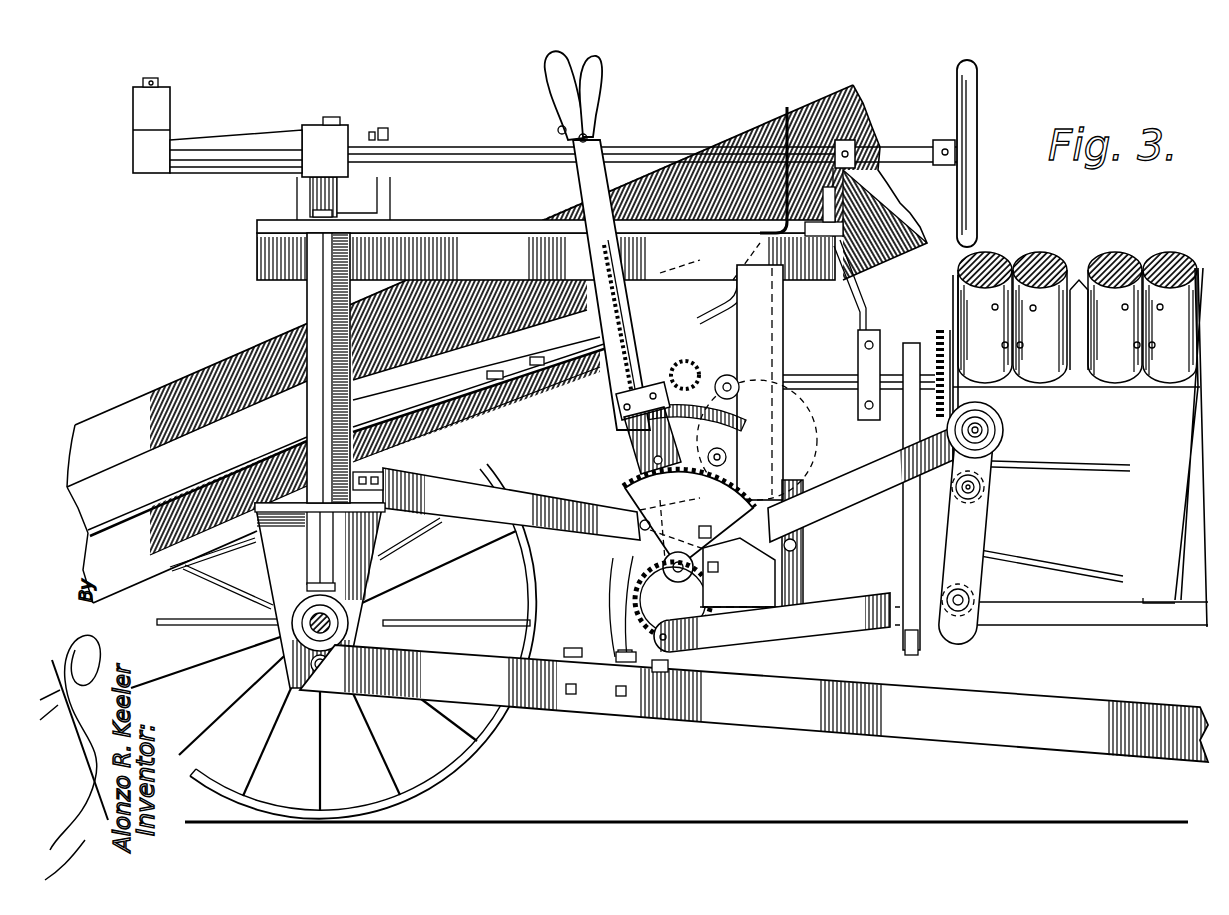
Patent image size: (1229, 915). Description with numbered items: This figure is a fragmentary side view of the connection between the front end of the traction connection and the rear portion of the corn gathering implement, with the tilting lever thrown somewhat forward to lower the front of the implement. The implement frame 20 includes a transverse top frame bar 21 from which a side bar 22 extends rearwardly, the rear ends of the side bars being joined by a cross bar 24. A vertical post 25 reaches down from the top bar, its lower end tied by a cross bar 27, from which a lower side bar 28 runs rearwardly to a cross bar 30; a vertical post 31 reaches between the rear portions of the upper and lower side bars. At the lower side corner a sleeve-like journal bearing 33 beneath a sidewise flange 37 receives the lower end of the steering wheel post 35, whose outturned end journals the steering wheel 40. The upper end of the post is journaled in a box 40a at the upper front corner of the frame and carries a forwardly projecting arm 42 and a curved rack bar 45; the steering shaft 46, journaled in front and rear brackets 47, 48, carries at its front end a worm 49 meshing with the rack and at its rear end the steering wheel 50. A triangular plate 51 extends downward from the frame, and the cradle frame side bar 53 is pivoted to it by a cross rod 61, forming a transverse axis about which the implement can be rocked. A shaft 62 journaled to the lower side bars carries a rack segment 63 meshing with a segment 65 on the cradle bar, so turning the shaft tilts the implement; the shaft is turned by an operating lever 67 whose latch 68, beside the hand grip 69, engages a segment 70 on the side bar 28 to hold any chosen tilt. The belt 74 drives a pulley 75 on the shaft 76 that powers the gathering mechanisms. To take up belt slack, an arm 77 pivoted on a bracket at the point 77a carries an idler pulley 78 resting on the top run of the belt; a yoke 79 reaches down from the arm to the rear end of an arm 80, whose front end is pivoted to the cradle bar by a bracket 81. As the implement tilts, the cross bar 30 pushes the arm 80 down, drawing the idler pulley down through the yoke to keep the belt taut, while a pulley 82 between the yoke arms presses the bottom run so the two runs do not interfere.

The frame 20 is at (232, 249).
The transverse top frame bar 21 is at (300, 216).
The side bar 22 is at (546, 256).
The cross bar 24 is at (787, 150).
The vertical post 25 is at (307, 312).
The cross bar 27 is at (250, 476).
The side bar 28 is at (496, 504).
The cross bar 30 is at (772, 566).
The vertical post 31 is at (765, 358).
The journal bearing 33 is at (310, 556).
The steering wheel post 35 is at (300, 318).
The flange 37 is at (240, 500).
The steering wheel 40 is at (503, 736).
The bracket 40a is at (332, 196).
The forwardly projecting arm 42 is at (258, 128).
The curved rack bar 45 is at (410, 140).
The steering shaft 46 is at (640, 148).
The front bracket 47 is at (383, 128).
The rear bracket 48 is at (853, 125).
The worm 49 is at (370, 132).
The steering wheel 50 is at (980, 108).
The triangular plate 51 is at (273, 583).
The side bar 53 is at (754, 703).
The cross rod 61 is at (292, 672).
The shaft 62 is at (638, 575).
The rack segment 63 is at (741, 604).
The segment 65 is at (625, 612).
The operating lever 67 is at (570, 200).
The latch 68 is at (655, 456).
The hand grip 69 is at (596, 100).
The segment 70 is at (625, 490).
The belt 74 is at (1085, 470).
The pulley 75 is at (640, 426).
The shaft 76 is at (730, 456).
The arm 77 is at (876, 487).
The pivot point 77a is at (800, 546).
The idler pulley 78 is at (1000, 432).
The yoke 79 is at (977, 538).
The arm 80 is at (873, 608).
The bracket 81 is at (672, 664).
The pulley 82 is at (984, 488).